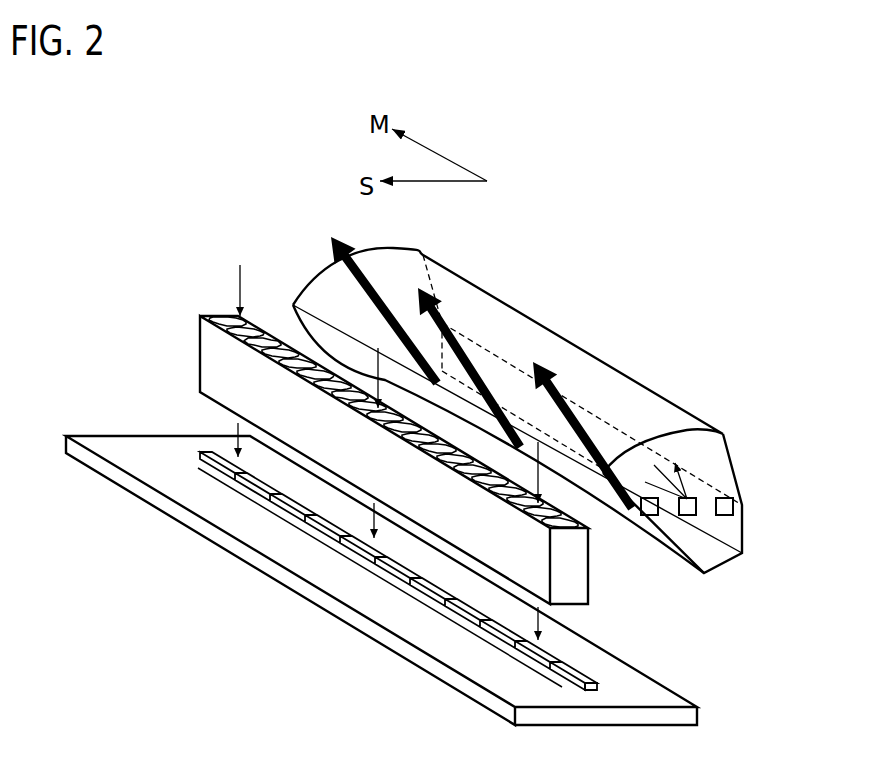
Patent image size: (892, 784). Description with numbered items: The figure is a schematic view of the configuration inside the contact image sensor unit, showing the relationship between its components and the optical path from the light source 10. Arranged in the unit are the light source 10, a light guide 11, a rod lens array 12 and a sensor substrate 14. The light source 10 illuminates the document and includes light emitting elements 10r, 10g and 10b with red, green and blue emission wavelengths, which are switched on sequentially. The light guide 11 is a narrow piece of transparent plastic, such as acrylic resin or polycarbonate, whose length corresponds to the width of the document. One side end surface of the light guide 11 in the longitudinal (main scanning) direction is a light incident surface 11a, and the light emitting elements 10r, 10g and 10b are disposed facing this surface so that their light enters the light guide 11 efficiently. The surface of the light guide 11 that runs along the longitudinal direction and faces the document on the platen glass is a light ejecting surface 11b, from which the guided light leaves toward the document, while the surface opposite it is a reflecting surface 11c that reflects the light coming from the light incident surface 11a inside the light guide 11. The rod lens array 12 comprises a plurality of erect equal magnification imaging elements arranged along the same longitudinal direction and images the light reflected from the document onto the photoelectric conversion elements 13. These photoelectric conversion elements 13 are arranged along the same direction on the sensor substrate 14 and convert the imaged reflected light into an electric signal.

The light source 10 is at (746, 528).
The light emitting element 10b is at (732, 507).
The light emitting element 10g is at (687, 516).
The light emitting element 10r is at (648, 516).
The light guide 11 is at (557, 450).
The light incident surface 11a is at (717, 462).
The light ejecting surface 11b is at (661, 415).
The reflecting surface 11c is at (723, 567).
The rod lens array 12 is at (207, 358).
The photoelectric conversion element 13 is at (372, 568).
The sensor substrate 14 is at (663, 692).